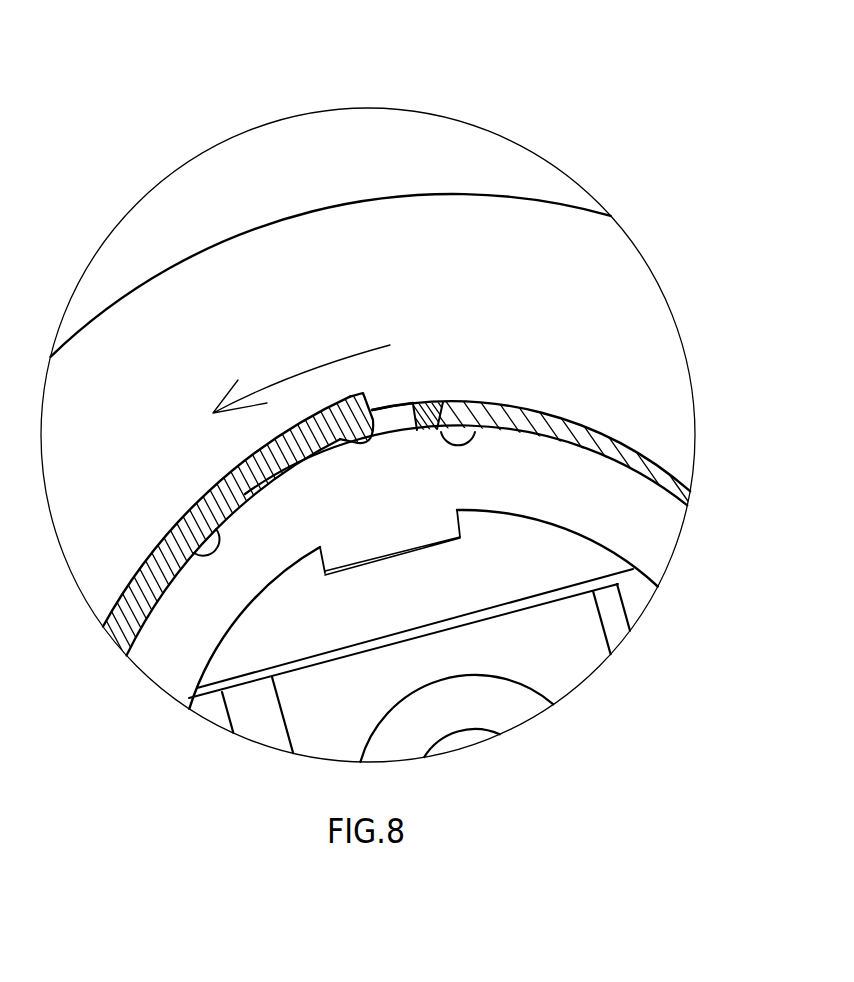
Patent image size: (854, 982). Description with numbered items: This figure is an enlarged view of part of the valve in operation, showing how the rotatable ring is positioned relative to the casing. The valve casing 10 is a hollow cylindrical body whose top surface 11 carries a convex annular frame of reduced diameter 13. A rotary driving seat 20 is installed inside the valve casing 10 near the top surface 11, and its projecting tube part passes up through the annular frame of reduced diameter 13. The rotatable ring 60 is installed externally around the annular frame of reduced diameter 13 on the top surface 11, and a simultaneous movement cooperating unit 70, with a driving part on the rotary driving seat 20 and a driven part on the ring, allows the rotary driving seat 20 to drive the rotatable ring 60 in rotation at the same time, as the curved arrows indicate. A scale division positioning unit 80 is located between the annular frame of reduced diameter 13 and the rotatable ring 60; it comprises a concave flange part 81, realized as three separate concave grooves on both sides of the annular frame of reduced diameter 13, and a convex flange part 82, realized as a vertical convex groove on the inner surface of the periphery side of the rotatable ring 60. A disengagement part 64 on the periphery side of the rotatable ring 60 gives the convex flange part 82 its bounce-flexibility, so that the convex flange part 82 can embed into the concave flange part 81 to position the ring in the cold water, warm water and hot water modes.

The valve casing 10 is at (340, 205).
The top surface 11 is at (253, 275).
The annular frame of reduced diameter 13 is at (560, 472).
The rotary driving seat 20 is at (588, 525).
The rotatable ring 60 is at (565, 380).
The disengagement part 64 is at (395, 435).
The simultaneous movement cooperating unit 70 is at (457, 598).
The scale division positioning unit 80 is at (502, 331).
The concave flange part 81 is at (465, 425).
The convex flange part 82 is at (374, 420).